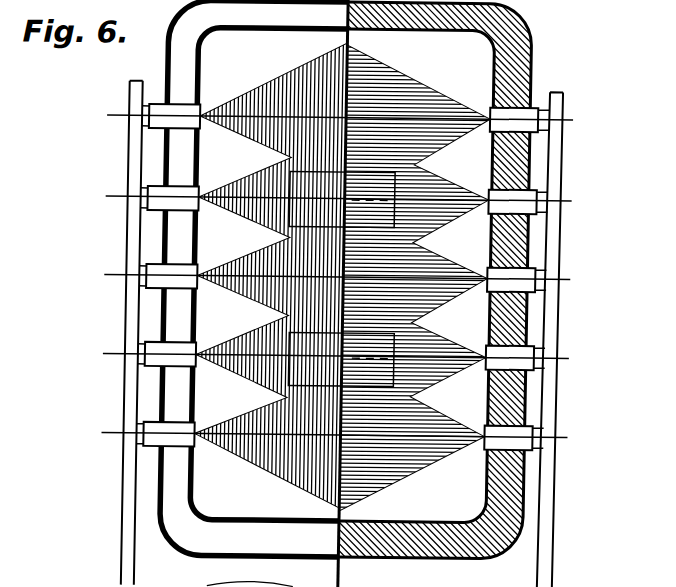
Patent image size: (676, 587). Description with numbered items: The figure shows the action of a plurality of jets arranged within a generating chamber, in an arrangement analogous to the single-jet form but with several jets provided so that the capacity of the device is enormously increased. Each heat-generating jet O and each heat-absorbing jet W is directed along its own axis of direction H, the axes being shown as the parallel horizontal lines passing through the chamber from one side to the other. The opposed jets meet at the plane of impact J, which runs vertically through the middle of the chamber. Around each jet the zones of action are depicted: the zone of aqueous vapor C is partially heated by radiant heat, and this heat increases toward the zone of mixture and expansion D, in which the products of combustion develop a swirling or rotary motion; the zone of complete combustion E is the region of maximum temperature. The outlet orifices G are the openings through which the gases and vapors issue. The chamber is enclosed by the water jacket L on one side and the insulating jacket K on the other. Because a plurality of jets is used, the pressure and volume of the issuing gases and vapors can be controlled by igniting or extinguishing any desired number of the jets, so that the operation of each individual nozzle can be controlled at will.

The axes of direction of the jets H is at (337, 276).
The zone of mixture and expansion D is at (340, 277).
The zone of complete combustion E is at (270, 274).
The zone of aqueous vapor C is at (415, 279).
The outlet orifices G is at (341, 278).
The plane of impact J is at (342, 15).
The water jacket L is at (253, 293).
The insulating jacket K is at (452, 533).
The heat-generating jet O is at (145, 294).
The heat-absorbing jet W is at (544, 431).